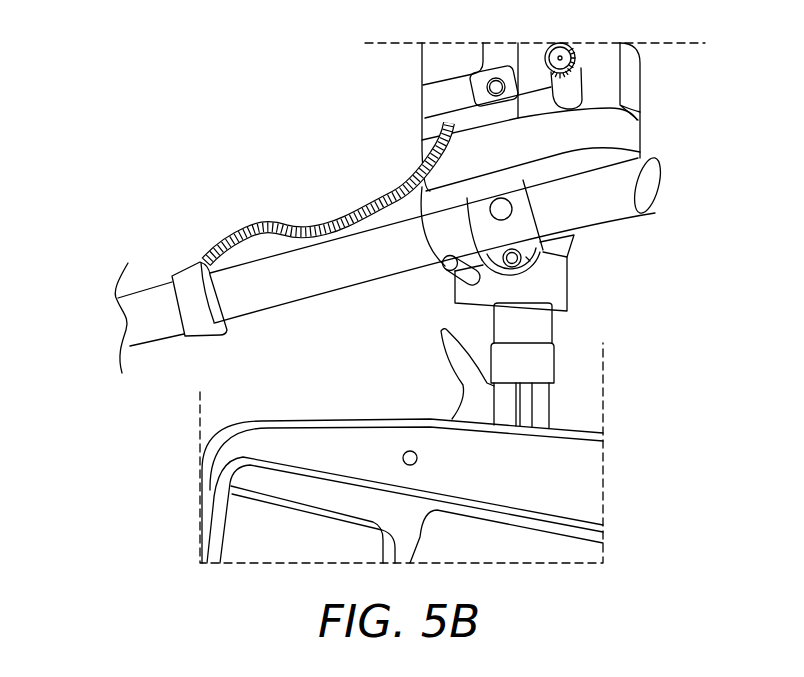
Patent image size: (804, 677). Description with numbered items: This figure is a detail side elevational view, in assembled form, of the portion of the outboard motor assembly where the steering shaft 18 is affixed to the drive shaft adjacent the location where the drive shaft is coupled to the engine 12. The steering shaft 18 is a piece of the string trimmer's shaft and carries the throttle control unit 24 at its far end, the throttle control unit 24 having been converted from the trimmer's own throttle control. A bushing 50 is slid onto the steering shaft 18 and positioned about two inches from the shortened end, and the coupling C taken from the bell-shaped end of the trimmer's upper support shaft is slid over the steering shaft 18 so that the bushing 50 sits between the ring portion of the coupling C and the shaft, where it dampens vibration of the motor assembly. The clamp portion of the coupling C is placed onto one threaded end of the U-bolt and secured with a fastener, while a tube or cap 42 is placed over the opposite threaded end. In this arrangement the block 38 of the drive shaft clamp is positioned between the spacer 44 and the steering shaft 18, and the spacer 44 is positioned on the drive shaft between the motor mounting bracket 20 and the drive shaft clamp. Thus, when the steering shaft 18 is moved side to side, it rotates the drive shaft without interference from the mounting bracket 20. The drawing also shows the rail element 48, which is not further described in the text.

The engine 12 is at (602, 90).
The steering shaft 18 is at (280, 287).
The motor mounting bracket 20 is at (568, 477).
The throttle control unit 24 is at (133, 326).
The block 38 is at (552, 282).
The tube or cap 42 is at (446, 270).
The spacer 44 is at (540, 330).
The rail tube 48 is at (540, 410).
The bushing 50 is at (441, 232).
The coupling C is at (528, 259).